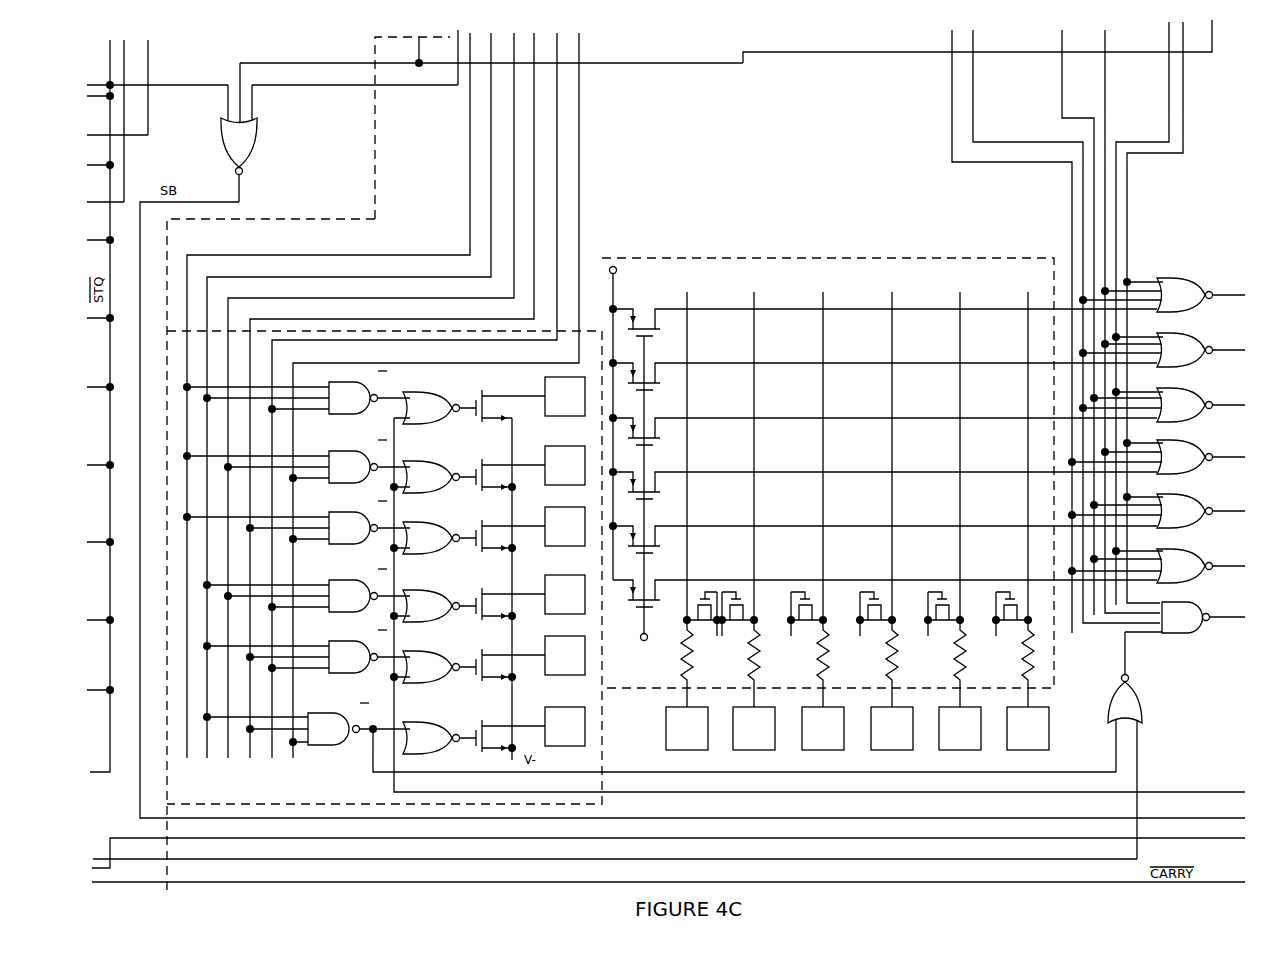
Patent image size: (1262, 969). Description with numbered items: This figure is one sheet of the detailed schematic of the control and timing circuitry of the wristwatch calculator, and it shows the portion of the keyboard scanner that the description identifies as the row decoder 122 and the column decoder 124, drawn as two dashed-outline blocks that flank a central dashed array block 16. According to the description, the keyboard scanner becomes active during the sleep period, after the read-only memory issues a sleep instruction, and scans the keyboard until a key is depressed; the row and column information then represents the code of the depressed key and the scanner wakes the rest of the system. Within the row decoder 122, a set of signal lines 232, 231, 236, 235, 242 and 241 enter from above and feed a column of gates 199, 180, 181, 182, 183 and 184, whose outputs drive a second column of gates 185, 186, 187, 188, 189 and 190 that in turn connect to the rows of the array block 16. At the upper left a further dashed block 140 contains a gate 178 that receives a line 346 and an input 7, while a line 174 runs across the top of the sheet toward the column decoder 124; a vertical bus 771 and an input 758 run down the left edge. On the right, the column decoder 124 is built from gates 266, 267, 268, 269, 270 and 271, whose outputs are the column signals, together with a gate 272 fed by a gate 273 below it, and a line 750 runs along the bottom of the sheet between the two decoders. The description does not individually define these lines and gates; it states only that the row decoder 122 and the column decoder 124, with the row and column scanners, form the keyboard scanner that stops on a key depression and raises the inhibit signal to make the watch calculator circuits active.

The STQ bus line 771 is at (157, 406).
The input line 758 is at (122, 96).
The NOR gate 178 is at (246, 132).
The line 346 is at (491, 59).
The IST line 174 is at (700, 47).
The input line 7 is at (355, 67).
The logic block 140 is at (327, 151).
The bus line 232 is at (328, 395).
The bus line 231 is at (349, 395).
The bus line 236 is at (371, 395).
The bus line 235 is at (392, 395).
The bus line 242 is at (414, 395).
The bus line 241 is at (436, 395).
The AND gate 199 is at (299, 394).
The AND gate 180 is at (286, 470).
The AND gate 181 is at (286, 530).
The AND gate 182 is at (296, 598).
The AND gate 183 is at (295, 659).
The NAND gate 184 is at (659, 734).
The NOR gate 185 is at (482, 405).
The NOR gate 186 is at (482, 474).
The NOR gate 187 is at (482, 535).
The NOR gate 188 is at (482, 603).
The NOR gate 189 is at (482, 664).
The NOR gate 190 is at (494, 735).
The FLST2 line 750 is at (811, 777).
The row decoder 122 is at (315, 793).
The memory array 16 is at (805, 286).
The column decoder 124 is at (1189, 225).
The NOR gate 266 is at (1163, 296).
The NOR gate 267 is at (1163, 351).
The NOR gate 268 is at (1163, 406).
The NOR gate 269 is at (1157, 458).
The NOR gate 270 is at (1157, 512).
The NOR gate 271 is at (1157, 566).
The AND gate 272 is at (1186, 621).
The NOR gate 273 is at (1134, 745).